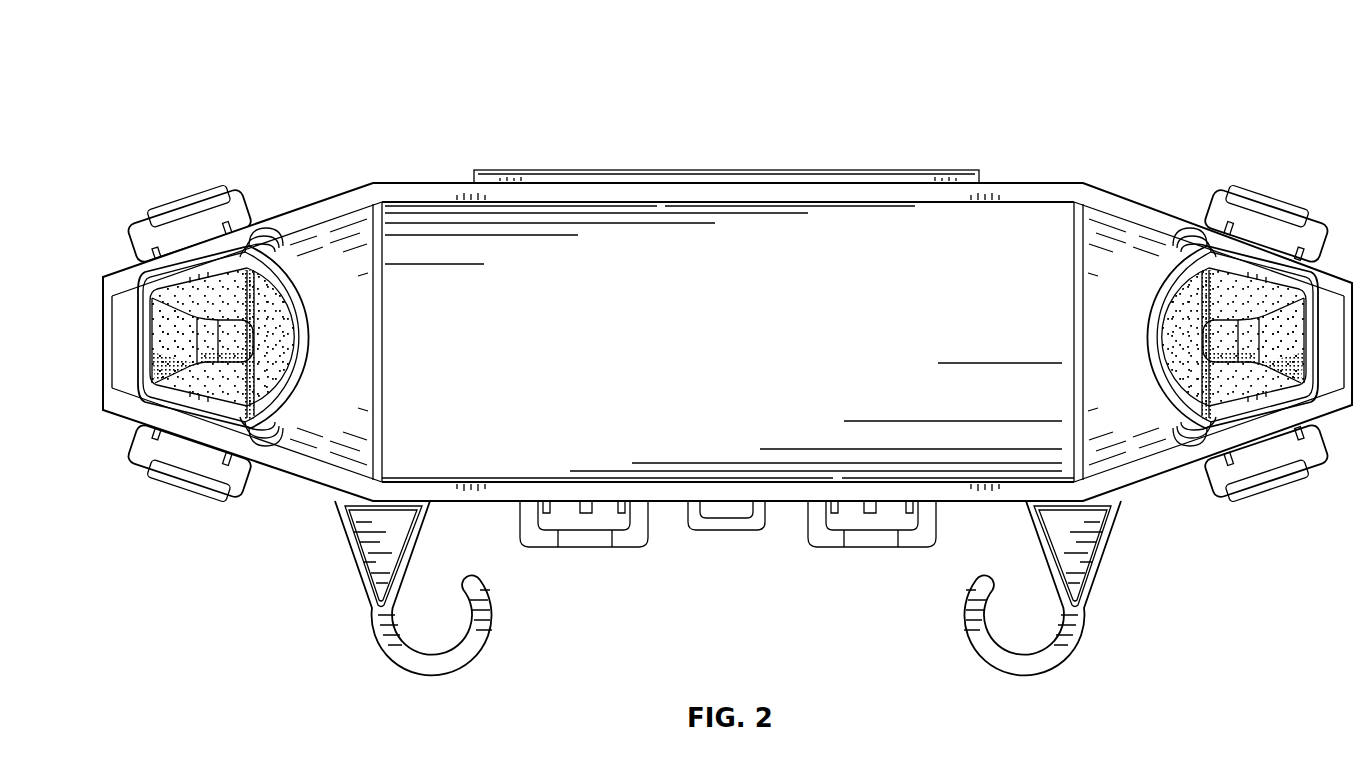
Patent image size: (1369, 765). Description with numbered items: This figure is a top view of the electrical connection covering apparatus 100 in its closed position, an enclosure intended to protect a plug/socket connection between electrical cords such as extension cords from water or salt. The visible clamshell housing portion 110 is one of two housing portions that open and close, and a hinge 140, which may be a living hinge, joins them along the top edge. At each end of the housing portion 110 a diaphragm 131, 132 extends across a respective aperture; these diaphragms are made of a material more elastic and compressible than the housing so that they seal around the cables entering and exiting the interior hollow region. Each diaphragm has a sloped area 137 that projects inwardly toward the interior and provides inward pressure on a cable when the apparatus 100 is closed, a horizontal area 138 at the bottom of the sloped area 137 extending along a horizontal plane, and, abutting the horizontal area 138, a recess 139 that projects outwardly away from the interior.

The electrical connection covering apparatus 100 is at (188, 56).
The housing portion 110 is at (699, 338).
The diaphragm 131 is at (268, 283).
The diaphragm 132 is at (1180, 307).
The sloped area 137 is at (222, 263).
The horizontal area 138 is at (217, 297).
The recess 139 is at (175, 320).
The hinge 140 is at (692, 168).